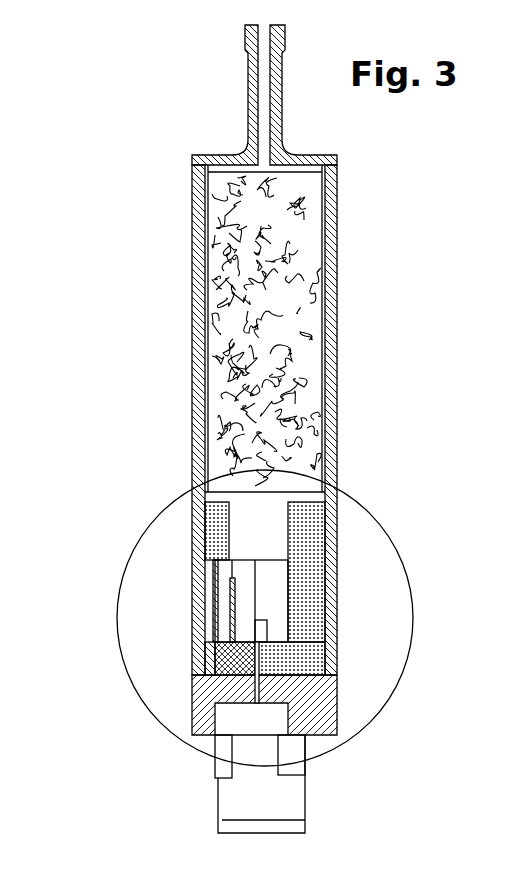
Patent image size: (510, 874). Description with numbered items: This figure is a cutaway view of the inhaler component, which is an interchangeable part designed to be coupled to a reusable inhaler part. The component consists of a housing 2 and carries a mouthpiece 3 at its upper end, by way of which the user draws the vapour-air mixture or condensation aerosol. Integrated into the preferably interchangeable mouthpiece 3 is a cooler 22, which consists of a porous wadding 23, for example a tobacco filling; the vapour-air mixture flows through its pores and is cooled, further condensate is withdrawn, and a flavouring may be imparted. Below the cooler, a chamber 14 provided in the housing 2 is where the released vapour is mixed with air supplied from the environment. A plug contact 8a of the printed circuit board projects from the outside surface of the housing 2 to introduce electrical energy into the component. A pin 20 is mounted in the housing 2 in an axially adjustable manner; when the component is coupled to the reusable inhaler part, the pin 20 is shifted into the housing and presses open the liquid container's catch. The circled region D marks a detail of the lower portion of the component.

The housing 2 is at (262, 380).
The mouthpiece 3 is at (262, 72).
The cooler 22 is at (163, 331).
The porous wadding 23 is at (255, 298).
The chamber 14 is at (258, 530).
The plug contact 8a is at (222, 765).
The pin 20 is at (295, 768).
The detail region D is at (375, 520).